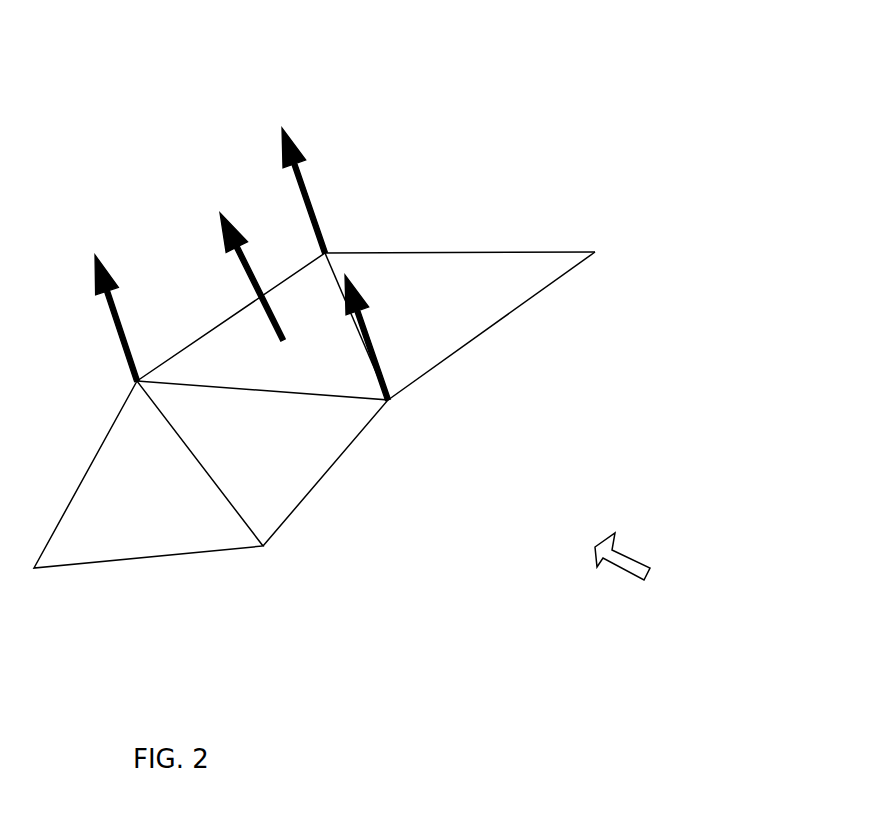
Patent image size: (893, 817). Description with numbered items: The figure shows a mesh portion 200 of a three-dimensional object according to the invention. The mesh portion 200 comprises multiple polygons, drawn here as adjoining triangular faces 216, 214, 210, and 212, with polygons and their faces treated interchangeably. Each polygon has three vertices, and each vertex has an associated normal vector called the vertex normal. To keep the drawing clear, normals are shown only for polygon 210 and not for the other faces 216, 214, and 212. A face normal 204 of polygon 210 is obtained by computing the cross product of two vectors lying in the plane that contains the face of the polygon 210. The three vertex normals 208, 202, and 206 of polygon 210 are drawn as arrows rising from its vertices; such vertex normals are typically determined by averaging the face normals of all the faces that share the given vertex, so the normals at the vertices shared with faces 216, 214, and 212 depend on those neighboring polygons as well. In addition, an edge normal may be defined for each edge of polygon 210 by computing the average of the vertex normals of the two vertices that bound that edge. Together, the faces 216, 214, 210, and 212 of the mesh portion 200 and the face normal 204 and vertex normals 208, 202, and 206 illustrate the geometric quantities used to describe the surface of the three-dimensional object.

The mesh portion 200 is at (638, 576).
The vertex normal 202 is at (303, 143).
The face normal 204 is at (220, 213).
The vertex normal 206 is at (116, 253).
The vertex normal 208 is at (390, 300).
The polygon 210 is at (323, 357).
The polygon face 212 is at (450, 294).
The polygon face 214 is at (283, 463).
The polygon face 216 is at (137, 505).